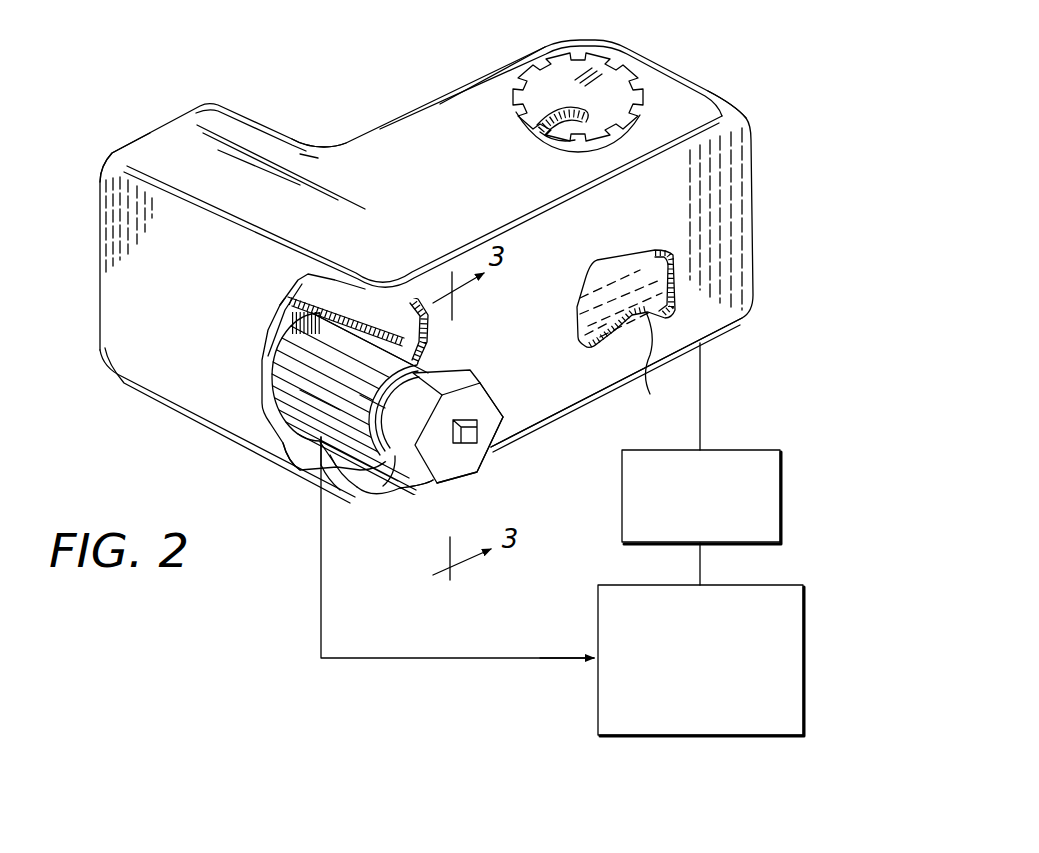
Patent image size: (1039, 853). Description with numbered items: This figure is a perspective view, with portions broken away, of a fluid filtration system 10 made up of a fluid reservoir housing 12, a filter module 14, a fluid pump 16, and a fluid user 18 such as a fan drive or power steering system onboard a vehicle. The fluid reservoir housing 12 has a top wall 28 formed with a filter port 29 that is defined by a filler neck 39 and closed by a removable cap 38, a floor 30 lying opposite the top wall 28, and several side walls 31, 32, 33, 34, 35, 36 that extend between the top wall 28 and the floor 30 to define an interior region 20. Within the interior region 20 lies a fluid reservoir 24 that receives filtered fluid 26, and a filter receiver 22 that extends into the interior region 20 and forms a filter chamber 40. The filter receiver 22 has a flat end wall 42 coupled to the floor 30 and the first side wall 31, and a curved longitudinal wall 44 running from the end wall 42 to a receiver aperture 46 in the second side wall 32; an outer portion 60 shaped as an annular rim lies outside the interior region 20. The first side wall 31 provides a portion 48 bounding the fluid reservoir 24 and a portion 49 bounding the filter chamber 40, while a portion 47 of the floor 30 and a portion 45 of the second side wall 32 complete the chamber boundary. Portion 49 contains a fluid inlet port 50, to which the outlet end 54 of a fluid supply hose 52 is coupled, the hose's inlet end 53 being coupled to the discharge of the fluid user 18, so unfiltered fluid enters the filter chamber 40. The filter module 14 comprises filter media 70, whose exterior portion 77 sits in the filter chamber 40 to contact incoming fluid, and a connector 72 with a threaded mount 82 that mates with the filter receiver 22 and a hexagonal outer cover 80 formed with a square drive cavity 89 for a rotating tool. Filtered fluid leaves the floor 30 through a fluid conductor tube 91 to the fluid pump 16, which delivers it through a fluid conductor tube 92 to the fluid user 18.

The fluid filtration system 10 is at (750, 58).
The fluid reservoir housing 12 is at (179, 114).
The filter module 14 is at (507, 393).
The fluid pump 16 is at (756, 445).
The fluid user 18 is at (794, 581).
The interior region 20 is at (598, 283).
The filter receiver 22 is at (327, 294).
The fluid reservoir 24 is at (609, 272).
The filtered fluid 26 is at (648, 367).
The top wall 28 is at (392, 180).
The filter port 29 is at (545, 142).
The floor 30 is at (577, 408).
The first side wall 31 is at (183, 335).
The second side wall 32 is at (542, 251).
The side wall 33 is at (712, 94).
The side wall 34 is at (476, 86).
The side wall 35 is at (283, 131).
The side wall 36 is at (146, 135).
The removable cap 38 is at (640, 76).
The filler neck 39 is at (610, 150).
The filter chamber 40 is at (363, 497).
The end wall 42 is at (283, 340).
The longitudinal wall 44 is at (346, 343).
The portion of second side wall 45 is at (400, 485).
The receiver aperture 46 is at (425, 349).
The portion of floor 47 is at (345, 486).
The portion of first side wall 48 is at (173, 380).
The portion of first side wall 49 is at (303, 463).
The fluid inlet port 50 is at (320, 441).
The fluid supply hose 52 is at (357, 657).
The inlet end 53 is at (332, 493).
The outlet end 54 is at (562, 655).
The outer portion 60 is at (404, 488).
The filter media 70 is at (358, 328).
The connector 72 is at (486, 470).
The exterior portion 77 is at (305, 394).
The outer cover 80 is at (511, 412).
The mount 82 is at (371, 404).
The square drive cavity 89 is at (477, 431).
The fluid conductor tube 91 is at (705, 393).
The fluid conductor tube 92 is at (700, 566).